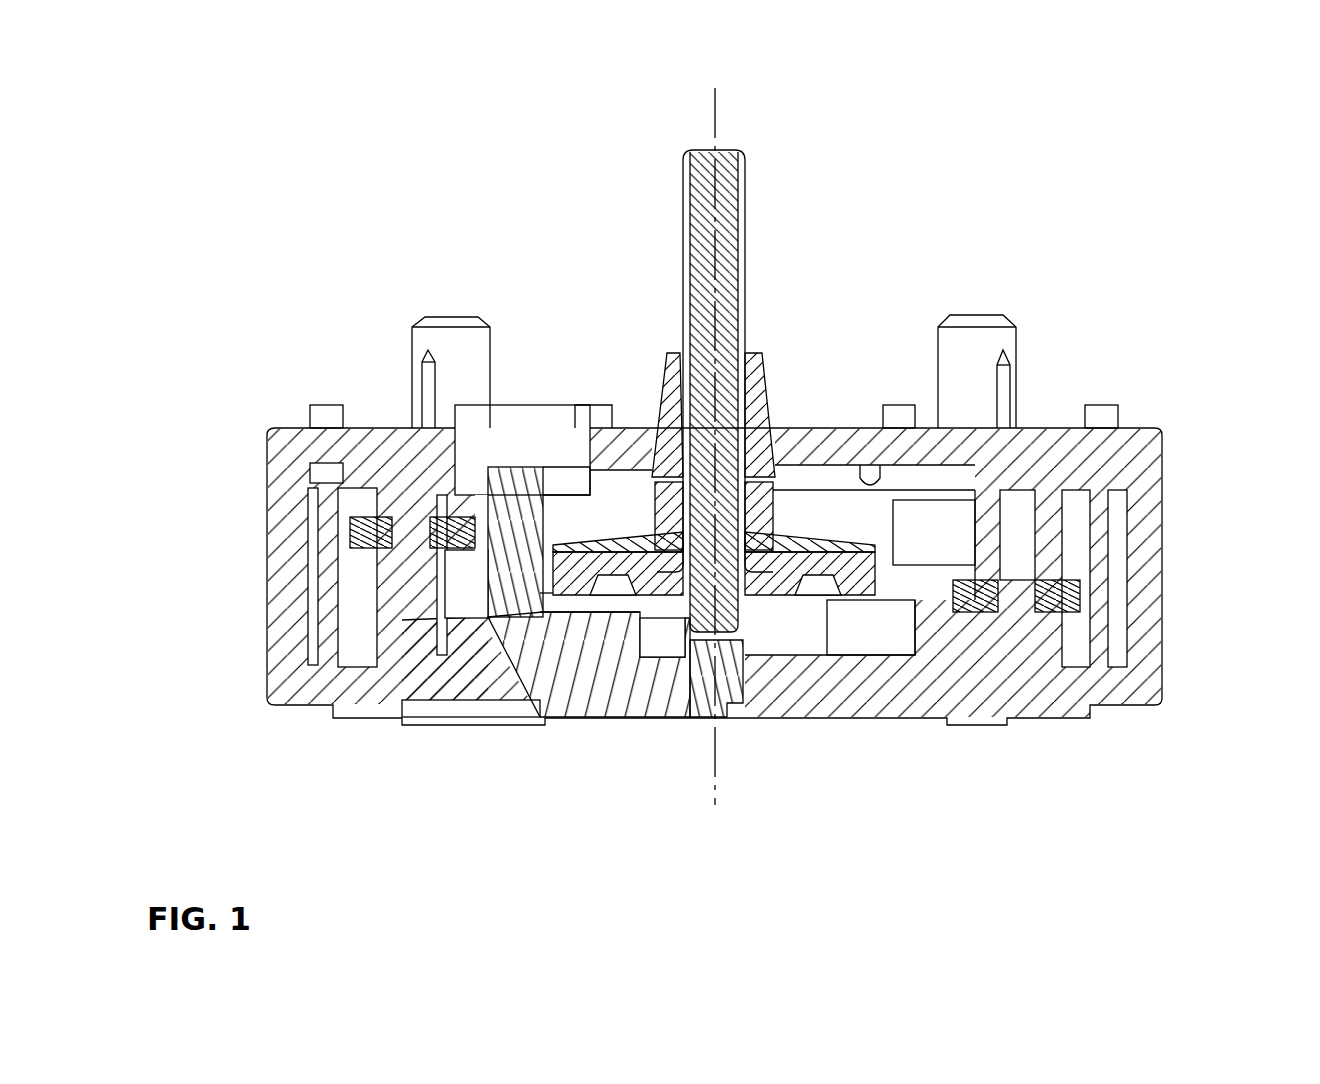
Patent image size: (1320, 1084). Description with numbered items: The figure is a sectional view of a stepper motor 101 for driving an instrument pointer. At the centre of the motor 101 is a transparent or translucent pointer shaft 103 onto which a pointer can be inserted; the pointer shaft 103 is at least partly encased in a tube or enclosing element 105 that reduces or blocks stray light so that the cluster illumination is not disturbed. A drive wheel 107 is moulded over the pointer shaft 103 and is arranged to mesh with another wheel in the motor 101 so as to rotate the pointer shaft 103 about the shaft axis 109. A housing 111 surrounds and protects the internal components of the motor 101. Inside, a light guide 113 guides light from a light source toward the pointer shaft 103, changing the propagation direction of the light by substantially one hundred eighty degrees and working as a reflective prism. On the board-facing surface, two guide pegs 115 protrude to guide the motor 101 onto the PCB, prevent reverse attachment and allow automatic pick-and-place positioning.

The stepper motor 101 is at (1097, 318).
The pointer shaft 103 is at (716, 140).
The tube or enclosing element 105 is at (745, 277).
The drive wheel 107 is at (805, 590).
The shaft axis 109 is at (713, 104).
The housing 111 is at (1165, 606).
The light guide 113 is at (522, 678).
The guide pegs 115 is at (457, 340).